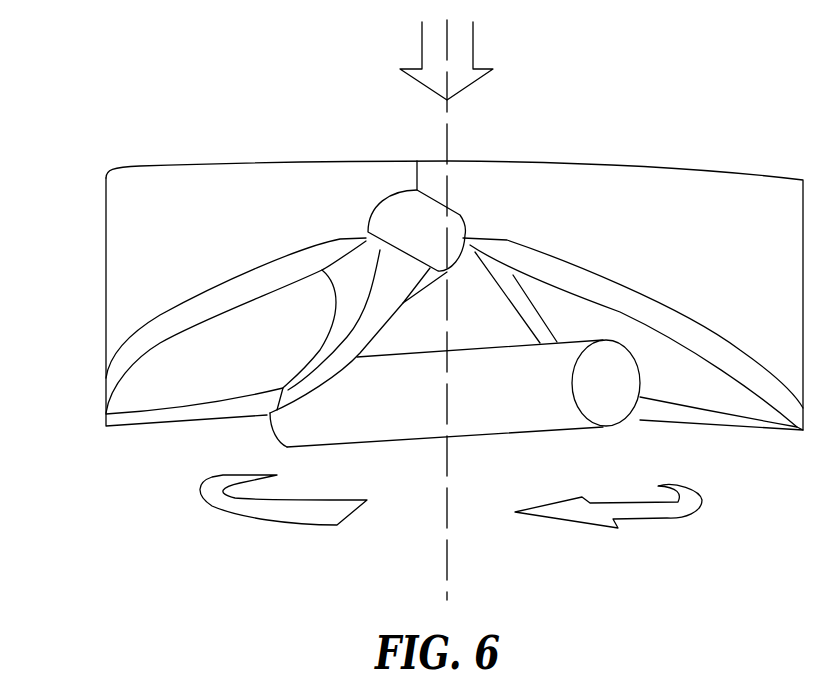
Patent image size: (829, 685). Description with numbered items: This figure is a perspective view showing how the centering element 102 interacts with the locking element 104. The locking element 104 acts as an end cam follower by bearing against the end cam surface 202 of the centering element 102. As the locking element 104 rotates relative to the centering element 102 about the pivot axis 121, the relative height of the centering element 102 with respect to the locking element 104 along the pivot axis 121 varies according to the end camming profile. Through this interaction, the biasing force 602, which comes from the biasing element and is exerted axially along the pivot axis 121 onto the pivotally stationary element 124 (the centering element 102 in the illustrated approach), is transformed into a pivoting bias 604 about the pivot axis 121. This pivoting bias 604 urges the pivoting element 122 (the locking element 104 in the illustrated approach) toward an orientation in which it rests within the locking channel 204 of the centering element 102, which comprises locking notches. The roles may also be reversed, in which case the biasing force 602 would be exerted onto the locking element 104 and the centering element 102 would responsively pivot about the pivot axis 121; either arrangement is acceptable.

The centering element 102 is at (106, 216).
The locking element 104 is at (455, 415).
The pivot axis 121 is at (447, 580).
The pivoting element 122 is at (395, 455).
The pivotally stationary element 124 is at (419, 267).
The end cam surface 202 is at (162, 363).
The locking channel 204 is at (398, 221).
The biasing force 602 is at (468, 43).
The pivoting bias 604 is at (267, 520).